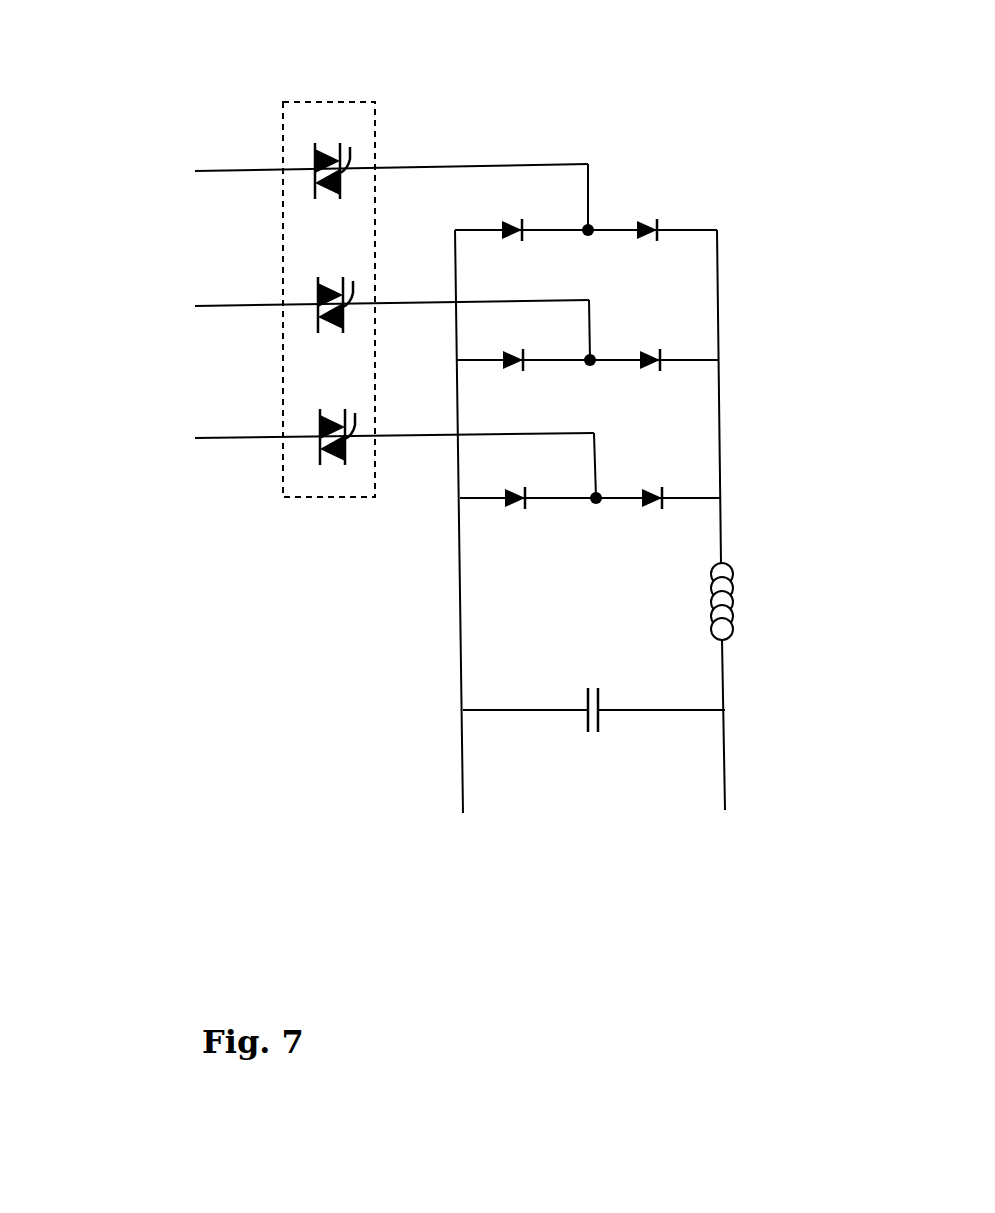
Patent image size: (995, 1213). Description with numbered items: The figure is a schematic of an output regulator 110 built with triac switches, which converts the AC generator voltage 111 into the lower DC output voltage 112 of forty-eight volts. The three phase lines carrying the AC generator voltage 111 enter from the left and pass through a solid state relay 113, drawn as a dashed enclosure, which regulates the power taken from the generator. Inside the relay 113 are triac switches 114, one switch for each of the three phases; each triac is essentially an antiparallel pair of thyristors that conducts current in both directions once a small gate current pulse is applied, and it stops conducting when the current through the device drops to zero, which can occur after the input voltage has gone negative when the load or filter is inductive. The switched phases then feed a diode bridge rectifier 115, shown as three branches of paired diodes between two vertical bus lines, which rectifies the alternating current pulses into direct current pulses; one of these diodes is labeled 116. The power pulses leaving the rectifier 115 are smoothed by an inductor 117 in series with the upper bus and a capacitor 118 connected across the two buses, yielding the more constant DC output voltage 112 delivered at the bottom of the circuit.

The output regulator 110 is at (502, 68).
The AC generator voltage 111 is at (89, 320).
The DC output voltage 112 is at (582, 868).
The solid state relay 113 is at (287, 486).
The triac switches 114 is at (347, 448).
The diode bridge rectifier 115 is at (742, 500).
The rectifier diode 116 is at (644, 212).
The inductor 117 is at (735, 604).
The capacitor 118 is at (603, 702).